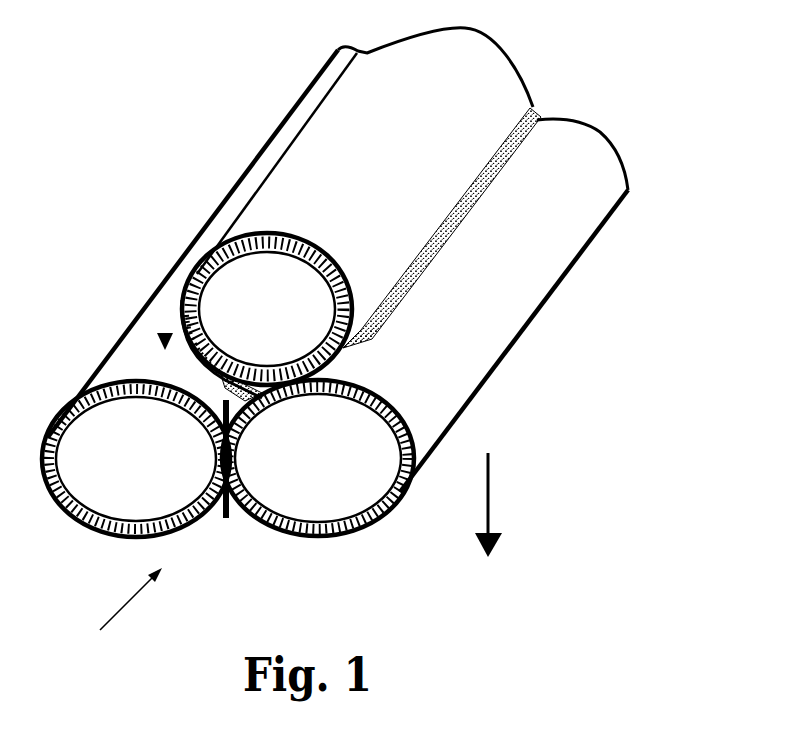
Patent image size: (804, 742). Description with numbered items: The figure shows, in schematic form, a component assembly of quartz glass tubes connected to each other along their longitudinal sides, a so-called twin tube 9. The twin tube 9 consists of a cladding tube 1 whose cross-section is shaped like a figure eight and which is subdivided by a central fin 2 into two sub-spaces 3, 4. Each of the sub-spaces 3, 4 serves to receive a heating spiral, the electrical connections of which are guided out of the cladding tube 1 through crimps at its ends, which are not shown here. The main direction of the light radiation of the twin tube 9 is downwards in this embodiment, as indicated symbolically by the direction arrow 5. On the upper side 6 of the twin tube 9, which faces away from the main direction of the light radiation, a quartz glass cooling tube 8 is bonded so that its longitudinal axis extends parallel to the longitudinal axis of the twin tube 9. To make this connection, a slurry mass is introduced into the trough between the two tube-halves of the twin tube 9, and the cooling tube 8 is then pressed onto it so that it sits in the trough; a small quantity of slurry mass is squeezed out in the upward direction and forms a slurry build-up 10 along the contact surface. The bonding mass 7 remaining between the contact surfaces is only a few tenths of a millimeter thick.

The cladding tube 1 is at (443, 393).
The central fin 2 is at (225, 460).
The sub-space 3 is at (113, 466).
The sub-space 4 is at (305, 465).
The direction arrow 5 is at (490, 523).
The upper side 6 is at (165, 336).
The bonding mass 7 is at (305, 366).
The cooling tube 8 is at (305, 308).
The twin tube 9 is at (121, 617).
The slurry build-up 10 is at (488, 210).